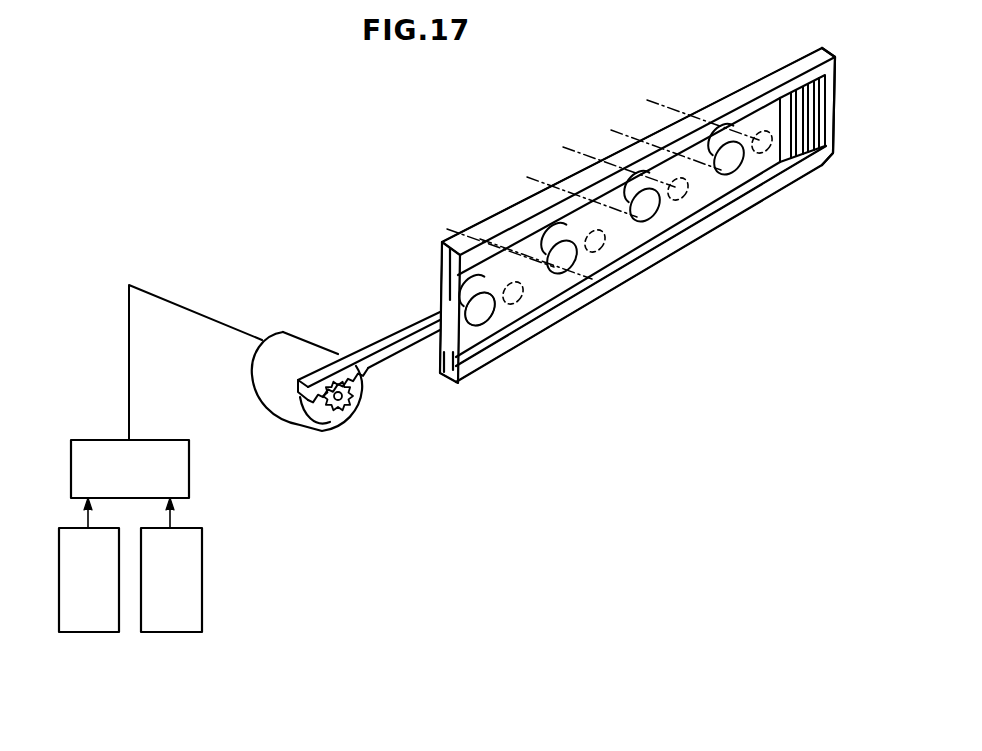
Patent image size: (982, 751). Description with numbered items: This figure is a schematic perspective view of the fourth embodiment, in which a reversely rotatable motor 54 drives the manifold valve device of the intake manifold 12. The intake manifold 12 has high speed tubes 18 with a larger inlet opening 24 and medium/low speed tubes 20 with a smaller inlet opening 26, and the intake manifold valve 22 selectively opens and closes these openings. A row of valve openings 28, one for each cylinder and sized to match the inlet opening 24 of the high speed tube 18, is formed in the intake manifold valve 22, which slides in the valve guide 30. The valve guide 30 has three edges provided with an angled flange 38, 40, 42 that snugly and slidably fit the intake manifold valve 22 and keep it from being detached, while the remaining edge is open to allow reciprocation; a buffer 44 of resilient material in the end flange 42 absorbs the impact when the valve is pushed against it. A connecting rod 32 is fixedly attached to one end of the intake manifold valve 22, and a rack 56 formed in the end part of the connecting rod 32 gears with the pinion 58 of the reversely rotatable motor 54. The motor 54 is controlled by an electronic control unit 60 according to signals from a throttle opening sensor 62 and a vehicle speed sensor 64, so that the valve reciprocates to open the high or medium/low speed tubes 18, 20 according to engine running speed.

The intake manifold 12 is at (342, 100).
The high speed tube 18 is at (440, 268).
The medium/low speed tube 20 is at (443, 237).
The intake manifold valve 22 is at (608, 252).
The inlet opening 24 is at (457, 230).
The inlet opening 26 is at (498, 245).
The valve opening 28 is at (490, 332).
The valve guide 30 is at (655, 266).
The connecting rod 32 is at (380, 343).
The angled flange 38 is at (777, 98).
The angled flange 40 is at (718, 213).
The end flange 42 is at (838, 108).
The buffer 44 is at (787, 160).
The reversely rotatable motor 54 is at (262, 343).
The rack 56 is at (366, 374).
The pinion 58 is at (338, 425).
The controller 60 is at (157, 458).
The throttle opening sensor 62 is at (97, 617).
The vehicle speed sensor 64 is at (185, 605).